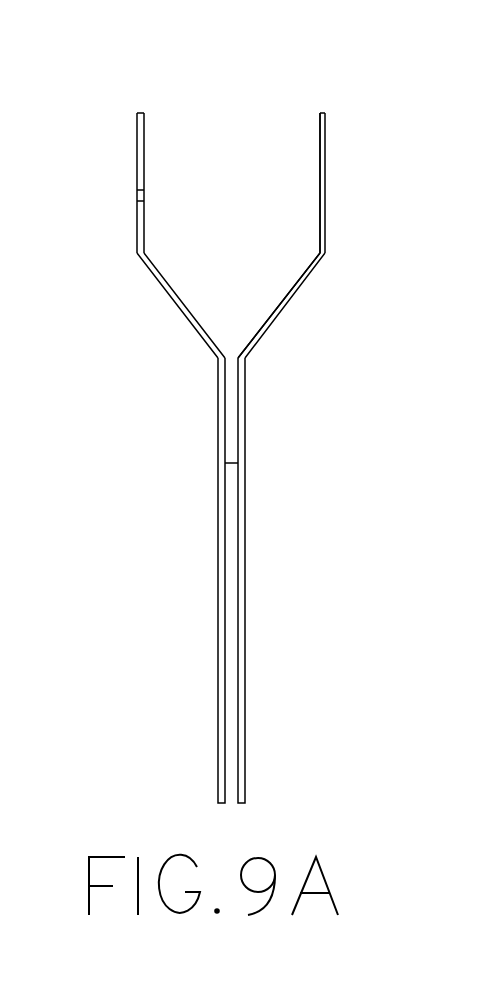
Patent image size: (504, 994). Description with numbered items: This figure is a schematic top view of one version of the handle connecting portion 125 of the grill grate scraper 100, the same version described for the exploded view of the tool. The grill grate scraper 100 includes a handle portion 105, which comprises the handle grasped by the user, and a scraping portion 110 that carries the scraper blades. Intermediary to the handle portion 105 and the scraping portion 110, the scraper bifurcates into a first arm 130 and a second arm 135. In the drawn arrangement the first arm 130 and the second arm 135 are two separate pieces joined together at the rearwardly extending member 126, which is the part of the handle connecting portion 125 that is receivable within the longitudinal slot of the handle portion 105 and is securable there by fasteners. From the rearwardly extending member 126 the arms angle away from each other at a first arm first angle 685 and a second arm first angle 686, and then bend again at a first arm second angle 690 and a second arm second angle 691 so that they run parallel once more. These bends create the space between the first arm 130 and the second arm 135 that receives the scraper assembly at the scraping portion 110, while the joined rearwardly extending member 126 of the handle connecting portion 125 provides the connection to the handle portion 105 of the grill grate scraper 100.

The grill grate scraper 100 is at (205, 103).
The scraping portion 110 is at (358, 117).
The first arm 130 is at (137, 160).
The second arm 135 is at (325, 165).
The first arm second angle 690 is at (137, 253).
The second arm second angle 691 is at (325, 253).
The first arm first angle 685 is at (218, 358).
The second arm first angle 686 is at (245, 358).
The handle portion 105 is at (280, 502).
The handle connecting portion 125 is at (193, 463).
The rearwardly extending member 126 is at (218, 600).